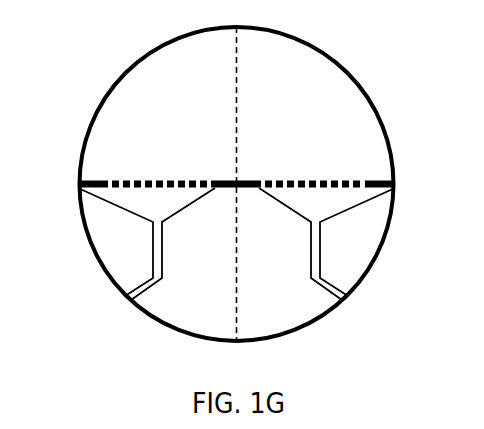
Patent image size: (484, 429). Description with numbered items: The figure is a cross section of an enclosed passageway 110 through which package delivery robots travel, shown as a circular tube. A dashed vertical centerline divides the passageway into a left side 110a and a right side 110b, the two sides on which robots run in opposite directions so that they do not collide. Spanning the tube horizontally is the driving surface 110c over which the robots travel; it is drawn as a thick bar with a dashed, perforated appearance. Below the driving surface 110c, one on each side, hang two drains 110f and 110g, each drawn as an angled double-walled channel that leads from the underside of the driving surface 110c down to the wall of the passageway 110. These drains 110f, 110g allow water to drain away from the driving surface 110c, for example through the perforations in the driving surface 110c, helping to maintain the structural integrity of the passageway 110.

The enclosed passageway 110 is at (260, 184).
The left side 110a is at (202, 78).
The right side 110b is at (322, 78).
The driving surface 110c is at (277, 155).
The drain 110f is at (112, 244).
The drain 110g is at (357, 244).